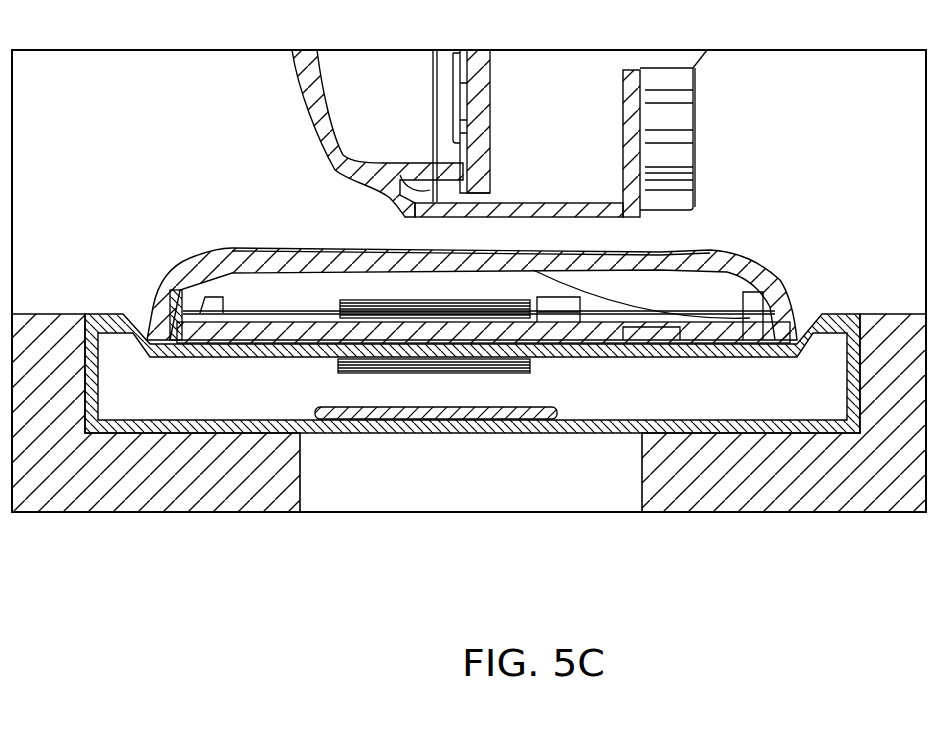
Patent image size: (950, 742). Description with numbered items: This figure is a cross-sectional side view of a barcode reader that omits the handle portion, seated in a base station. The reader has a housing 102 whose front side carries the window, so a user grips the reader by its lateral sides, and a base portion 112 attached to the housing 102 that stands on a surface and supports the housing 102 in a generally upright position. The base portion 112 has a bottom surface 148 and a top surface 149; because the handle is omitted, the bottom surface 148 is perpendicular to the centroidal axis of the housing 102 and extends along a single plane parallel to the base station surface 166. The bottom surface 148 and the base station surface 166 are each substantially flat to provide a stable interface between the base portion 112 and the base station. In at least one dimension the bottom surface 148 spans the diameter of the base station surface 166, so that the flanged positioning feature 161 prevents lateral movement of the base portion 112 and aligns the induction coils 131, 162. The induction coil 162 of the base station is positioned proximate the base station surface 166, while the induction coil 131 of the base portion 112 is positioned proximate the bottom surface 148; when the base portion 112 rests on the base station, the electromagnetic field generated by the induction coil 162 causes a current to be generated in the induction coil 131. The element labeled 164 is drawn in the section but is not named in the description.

The housing 102 is at (690, 134).
The base portion 112 is at (783, 283).
The induction coil 131 is at (421, 307).
The bottom surface 148 is at (700, 372).
The top surface 149 is at (298, 249).
The flanged positioning feature 161 is at (117, 350).
The induction coil 162 is at (522, 375).
The plate 164 is at (322, 419).
The base station surface 166 is at (627, 328).